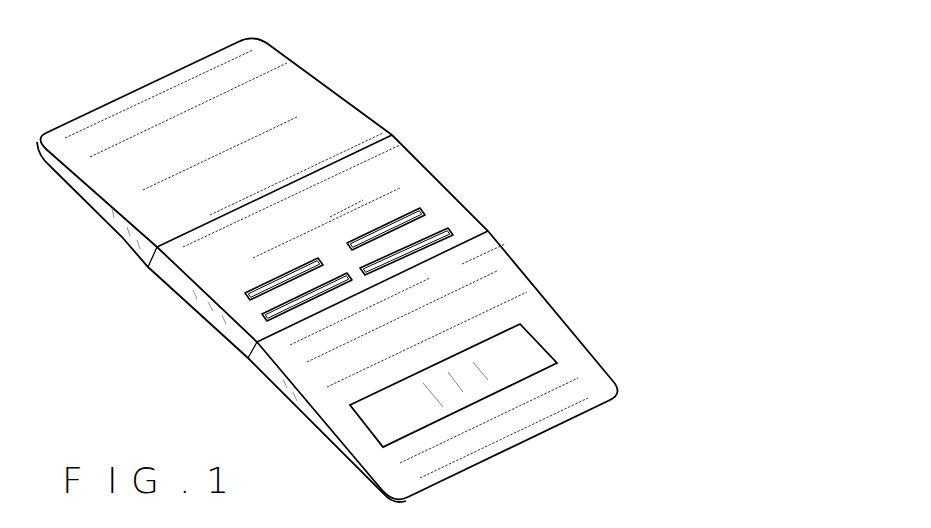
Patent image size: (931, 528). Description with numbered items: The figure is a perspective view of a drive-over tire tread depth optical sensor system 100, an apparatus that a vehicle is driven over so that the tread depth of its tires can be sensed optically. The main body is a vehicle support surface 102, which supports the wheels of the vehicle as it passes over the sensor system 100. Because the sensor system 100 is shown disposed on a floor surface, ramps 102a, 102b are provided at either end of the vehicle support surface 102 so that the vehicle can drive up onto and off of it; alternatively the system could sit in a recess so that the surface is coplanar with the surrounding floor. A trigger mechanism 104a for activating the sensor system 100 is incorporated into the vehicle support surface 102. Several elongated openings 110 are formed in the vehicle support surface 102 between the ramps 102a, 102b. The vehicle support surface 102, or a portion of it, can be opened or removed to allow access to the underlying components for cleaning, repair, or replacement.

The drive-over tire tread depth optical sensor system 100 is at (428, 128).
The vehicle support surface 102 is at (233, 272).
The ramp 102a is at (502, 288).
The ramp 102b is at (312, 99).
The trigger mechanism 104a is at (378, 420).
The slot openings 110 is at (421, 208).